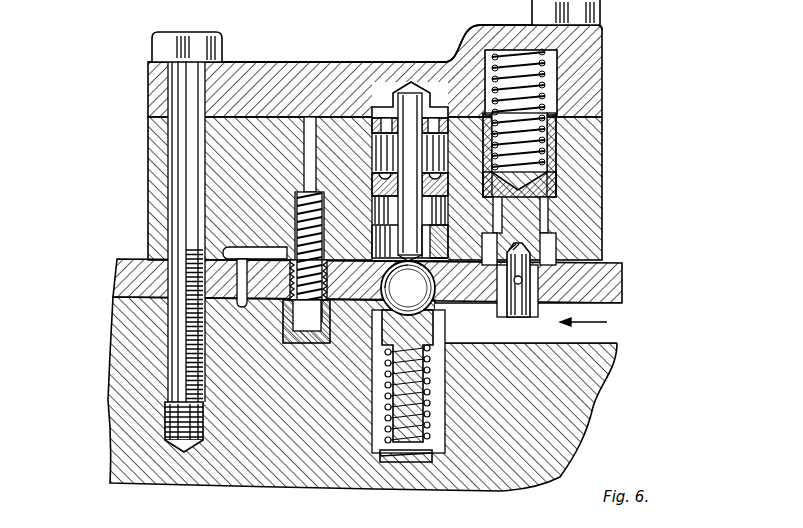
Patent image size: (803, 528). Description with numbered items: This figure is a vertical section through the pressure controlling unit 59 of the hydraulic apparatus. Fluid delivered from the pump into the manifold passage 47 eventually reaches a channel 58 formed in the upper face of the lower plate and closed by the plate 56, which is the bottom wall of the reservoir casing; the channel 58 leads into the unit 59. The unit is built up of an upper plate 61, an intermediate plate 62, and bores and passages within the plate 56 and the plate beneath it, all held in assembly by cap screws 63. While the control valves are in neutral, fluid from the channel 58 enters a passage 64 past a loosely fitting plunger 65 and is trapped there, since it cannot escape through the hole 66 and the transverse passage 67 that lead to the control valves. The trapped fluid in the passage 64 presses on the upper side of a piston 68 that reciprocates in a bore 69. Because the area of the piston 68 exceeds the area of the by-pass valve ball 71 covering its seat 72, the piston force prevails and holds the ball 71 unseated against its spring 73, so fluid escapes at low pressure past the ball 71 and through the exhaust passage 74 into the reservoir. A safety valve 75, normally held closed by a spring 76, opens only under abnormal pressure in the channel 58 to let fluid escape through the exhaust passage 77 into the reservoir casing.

The manifold passage 47 is at (120, 346).
The bottom wall 56 is at (125, 272).
The channel 58 is at (616, 334).
The pressure controlling unit 59 is at (378, 60).
The upper plate 61 is at (153, 86).
The intermediate plate 62 is at (153, 169).
The cap screws 63 is at (172, 33).
The passage 64 is at (297, 213).
The plunger 65 is at (333, 295).
The hole 66 is at (241, 270).
The transverse passage 67 is at (241, 312).
The piston 68 is at (371, 198).
The bore 69 is at (372, 233).
The by-pass valve ball 71 is at (392, 302).
The seat 72 is at (441, 267).
The spring 73 is at (428, 392).
The exhaust passage 74 is at (441, 246).
The safety valve 75 is at (600, 218).
The spring 76 is at (600, 157).
The exhaust passage 77 is at (490, 255).